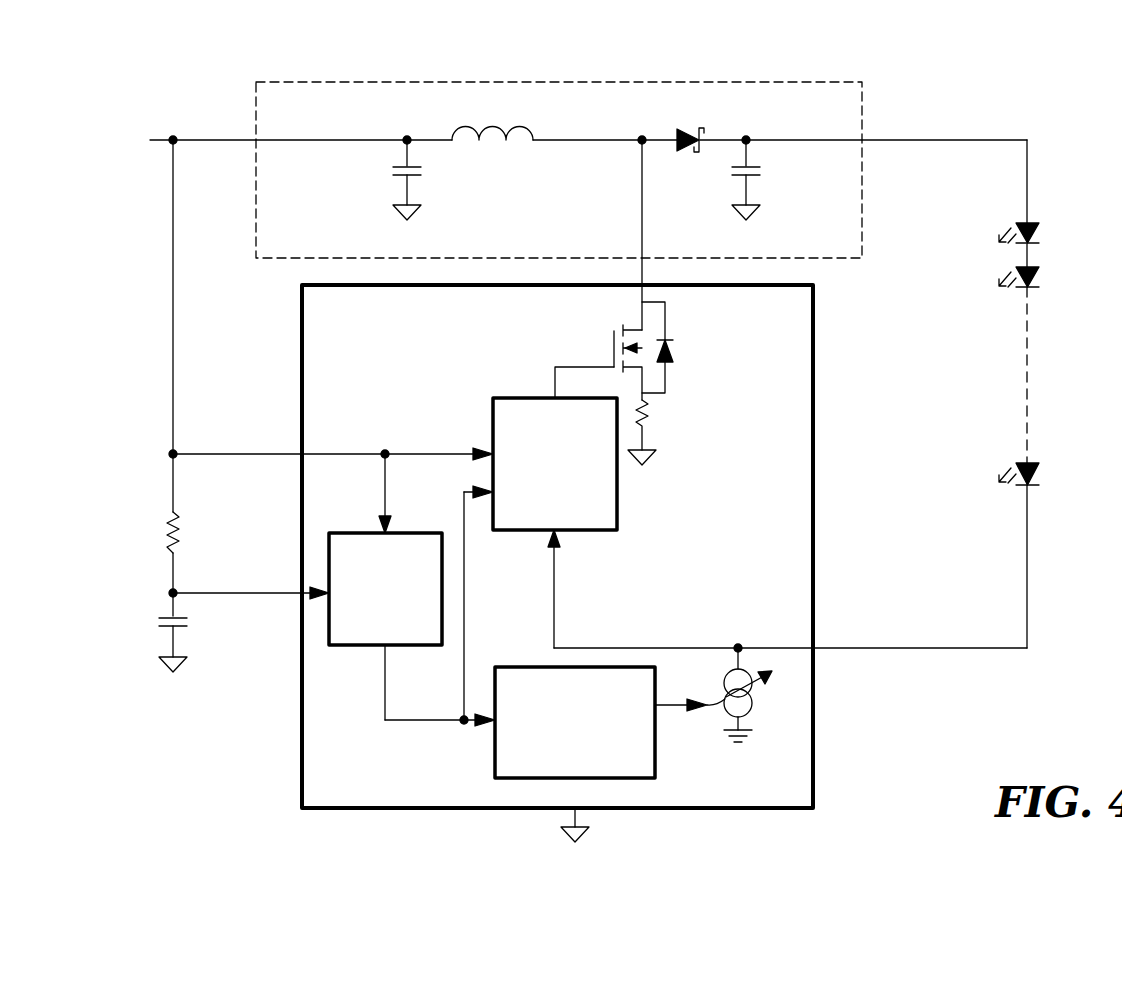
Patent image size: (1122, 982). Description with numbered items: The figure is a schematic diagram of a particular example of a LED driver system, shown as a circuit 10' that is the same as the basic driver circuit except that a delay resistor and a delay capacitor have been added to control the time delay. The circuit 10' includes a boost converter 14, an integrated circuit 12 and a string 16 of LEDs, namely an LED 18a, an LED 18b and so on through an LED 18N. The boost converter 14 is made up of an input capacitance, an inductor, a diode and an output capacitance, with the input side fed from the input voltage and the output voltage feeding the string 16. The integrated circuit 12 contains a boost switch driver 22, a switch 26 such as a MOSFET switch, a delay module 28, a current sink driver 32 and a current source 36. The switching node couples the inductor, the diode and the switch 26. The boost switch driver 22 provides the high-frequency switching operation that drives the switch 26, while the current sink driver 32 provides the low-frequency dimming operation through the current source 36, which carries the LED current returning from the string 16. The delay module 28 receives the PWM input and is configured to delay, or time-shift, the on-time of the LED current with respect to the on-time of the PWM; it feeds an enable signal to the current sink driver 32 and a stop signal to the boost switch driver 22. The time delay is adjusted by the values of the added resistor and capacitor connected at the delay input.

The circuit 10' is at (590, 341).
The boost converter 14 is at (836, 116).
The integrated circuit 12 is at (557, 492).
The string of LEDs 16 is at (1027, 346).
The LED 18a is at (1042, 236).
The LED 18b is at (1042, 279).
The LED 18N is at (1042, 471).
The boost switch driver 22 is at (543, 519).
The switch 26 is at (675, 358).
The delay module 28 is at (373, 629).
The current sink driver 32 is at (563, 767).
The current source 36 is at (755, 704).